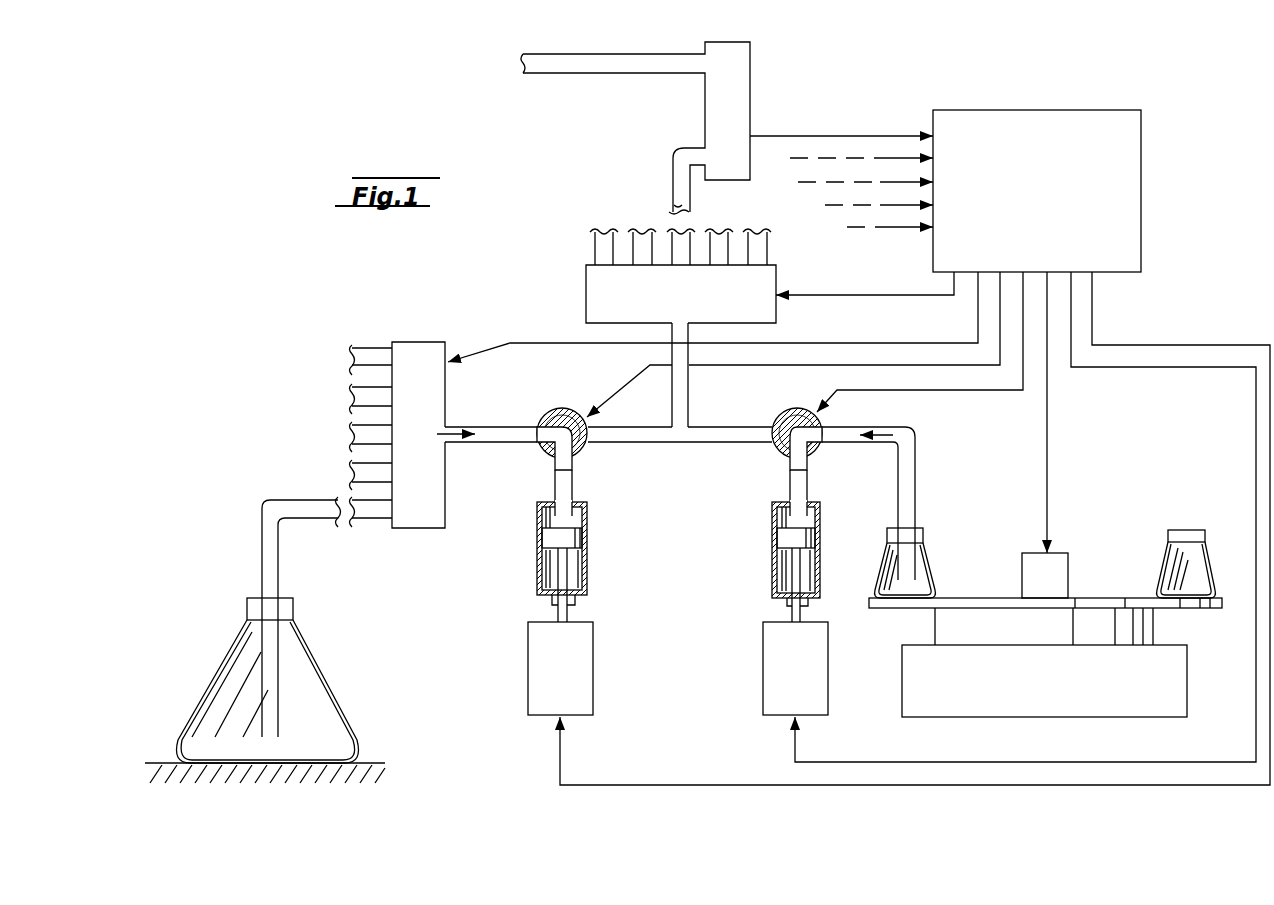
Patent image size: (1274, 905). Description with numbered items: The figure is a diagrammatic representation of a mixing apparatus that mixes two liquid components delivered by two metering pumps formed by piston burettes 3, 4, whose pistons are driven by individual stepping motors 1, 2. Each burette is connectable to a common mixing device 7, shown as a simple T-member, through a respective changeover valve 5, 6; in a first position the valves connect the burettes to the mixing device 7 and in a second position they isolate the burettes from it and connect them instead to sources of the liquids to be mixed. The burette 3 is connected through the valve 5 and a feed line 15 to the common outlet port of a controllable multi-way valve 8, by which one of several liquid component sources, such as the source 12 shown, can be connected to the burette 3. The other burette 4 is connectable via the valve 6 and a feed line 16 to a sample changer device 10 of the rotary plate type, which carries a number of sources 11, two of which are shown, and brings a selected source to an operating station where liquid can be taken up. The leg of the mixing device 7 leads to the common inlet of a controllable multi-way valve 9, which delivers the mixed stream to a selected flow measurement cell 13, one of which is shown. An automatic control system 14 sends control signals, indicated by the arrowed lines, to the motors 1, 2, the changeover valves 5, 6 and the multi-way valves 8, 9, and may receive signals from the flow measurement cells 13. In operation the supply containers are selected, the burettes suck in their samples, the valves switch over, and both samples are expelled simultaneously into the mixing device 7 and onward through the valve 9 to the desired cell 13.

The stepping motor 1 is at (580, 670).
The stepping motor 2 is at (772, 663).
The piston burette 3 is at (573, 517).
The piston burette 4 is at (772, 518).
The changeover valve 5 is at (576, 455).
The changeover valve 6 is at (778, 451).
The mixing device 7 is at (680, 445).
The multi-way valve 8 is at (445, 395).
The multi-way valve 9 is at (586, 294).
The sample changer device 10 is at (1028, 707).
The source 11 is at (918, 572).
The source 12 is at (325, 705).
The flow measurement cell 13 is at (706, 103).
The automatic control system 14 is at (1141, 192).
The feed line 15 is at (499, 445).
The feed line 16 is at (908, 476).